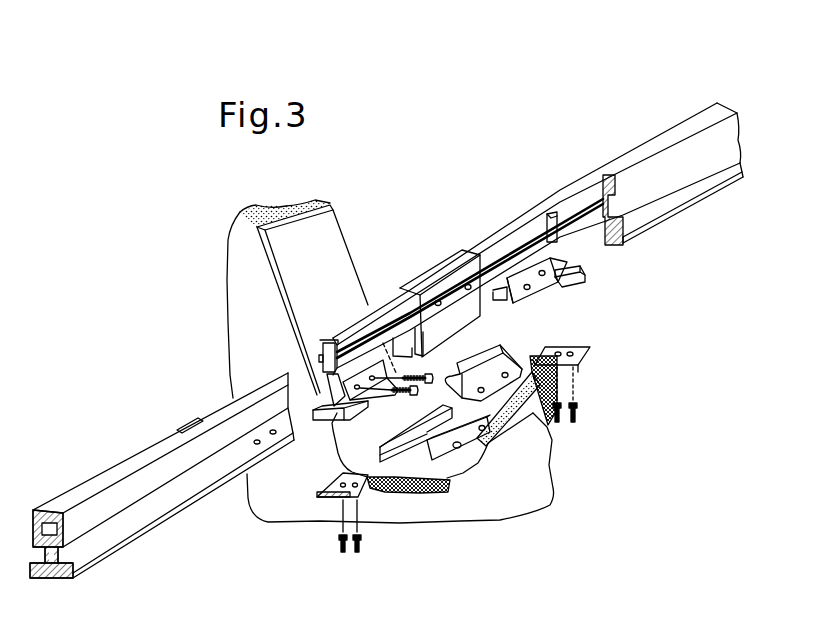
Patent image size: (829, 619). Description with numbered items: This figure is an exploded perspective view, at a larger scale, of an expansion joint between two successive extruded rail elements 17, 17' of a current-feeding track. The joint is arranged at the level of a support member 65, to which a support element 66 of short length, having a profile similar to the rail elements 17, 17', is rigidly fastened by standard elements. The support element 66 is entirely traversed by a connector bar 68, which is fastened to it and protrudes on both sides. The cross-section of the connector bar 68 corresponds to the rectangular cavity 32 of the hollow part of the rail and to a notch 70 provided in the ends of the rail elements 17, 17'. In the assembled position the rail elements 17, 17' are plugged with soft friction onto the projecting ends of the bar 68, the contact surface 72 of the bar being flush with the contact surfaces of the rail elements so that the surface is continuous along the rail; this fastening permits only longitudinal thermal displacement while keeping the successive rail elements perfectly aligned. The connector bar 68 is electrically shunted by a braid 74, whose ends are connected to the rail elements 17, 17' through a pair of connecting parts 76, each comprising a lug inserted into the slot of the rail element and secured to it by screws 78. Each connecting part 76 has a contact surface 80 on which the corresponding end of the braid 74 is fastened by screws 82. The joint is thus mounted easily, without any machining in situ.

The rail element 17 is at (538, 225).
The rail element 17' is at (162, 475).
The cavity 32 is at (48, 523).
The support member 65 is at (530, 473).
The support element 66 is at (470, 317).
The connector bar 68 is at (382, 330).
The notch 70 is at (197, 421).
The contact surface 72 is at (486, 241).
The braid 74 is at (417, 477).
The connecting part 76 is at (320, 395).
The screws 78 is at (447, 405).
The contact surface 80 is at (580, 283).
The screws 82 is at (583, 411).